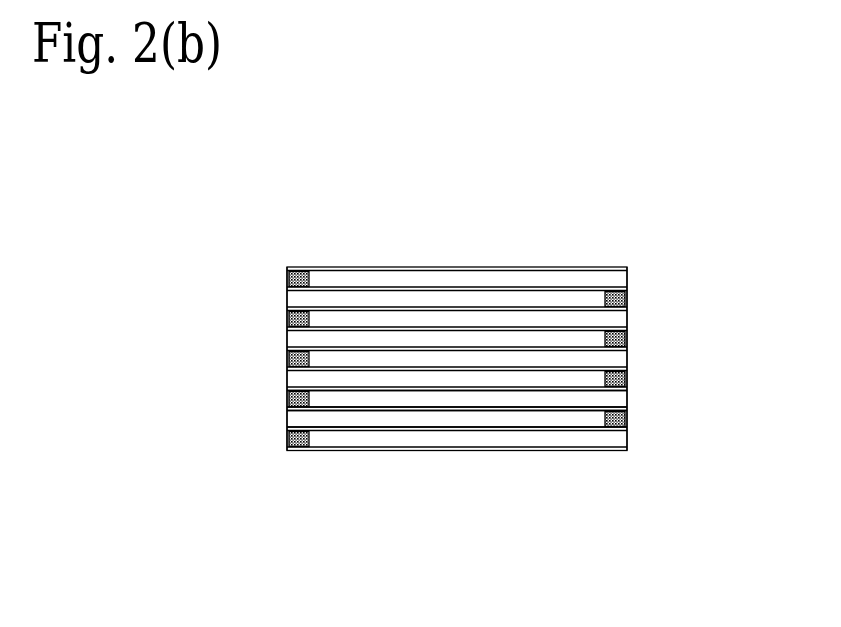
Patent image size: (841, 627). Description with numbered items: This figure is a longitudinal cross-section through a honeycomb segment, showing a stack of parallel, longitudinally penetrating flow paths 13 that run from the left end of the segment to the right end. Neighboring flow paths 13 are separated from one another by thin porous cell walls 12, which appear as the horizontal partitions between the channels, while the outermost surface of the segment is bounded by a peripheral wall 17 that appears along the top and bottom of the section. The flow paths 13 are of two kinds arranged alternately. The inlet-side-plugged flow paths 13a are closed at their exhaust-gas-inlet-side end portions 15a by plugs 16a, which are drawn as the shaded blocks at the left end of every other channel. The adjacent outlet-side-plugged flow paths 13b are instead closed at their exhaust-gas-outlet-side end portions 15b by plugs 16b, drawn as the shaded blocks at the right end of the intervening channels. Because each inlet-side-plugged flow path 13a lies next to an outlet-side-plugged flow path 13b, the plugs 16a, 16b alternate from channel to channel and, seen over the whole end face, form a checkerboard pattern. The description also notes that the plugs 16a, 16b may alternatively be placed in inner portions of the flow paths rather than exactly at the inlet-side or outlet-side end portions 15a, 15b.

The porous cell walls 12 is at (398, 289).
The flow paths 13 is at (480, 505).
The inlet-side-plugged flow paths 13a is at (372, 400).
The outlet-side-plugged flow paths 13b is at (450, 418).
The exhaust-gas-inlet-side end portions 15a is at (287, 301).
The exhaust-gas-outlet-side end portions 15b is at (627, 281).
The plugs 16a is at (297, 359).
The plugs 16b is at (618, 337).
The peripheral wall 17 is at (530, 270).